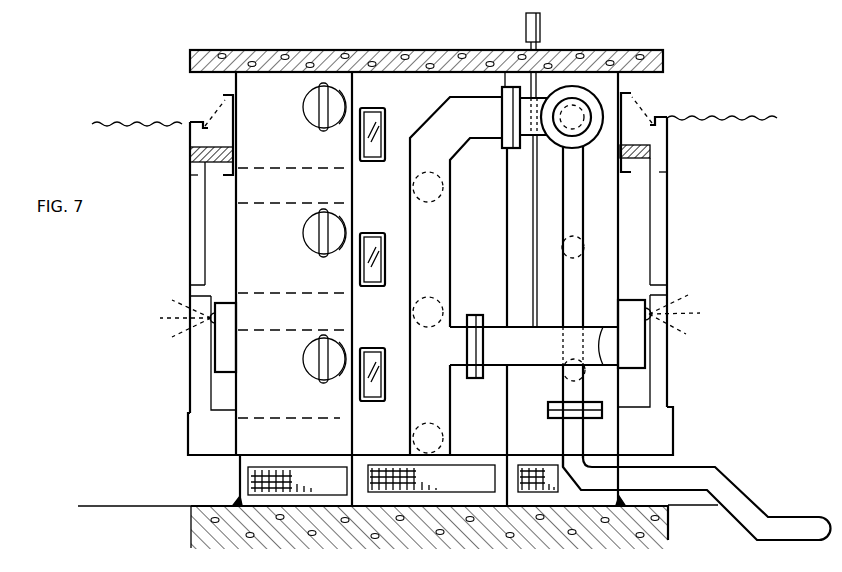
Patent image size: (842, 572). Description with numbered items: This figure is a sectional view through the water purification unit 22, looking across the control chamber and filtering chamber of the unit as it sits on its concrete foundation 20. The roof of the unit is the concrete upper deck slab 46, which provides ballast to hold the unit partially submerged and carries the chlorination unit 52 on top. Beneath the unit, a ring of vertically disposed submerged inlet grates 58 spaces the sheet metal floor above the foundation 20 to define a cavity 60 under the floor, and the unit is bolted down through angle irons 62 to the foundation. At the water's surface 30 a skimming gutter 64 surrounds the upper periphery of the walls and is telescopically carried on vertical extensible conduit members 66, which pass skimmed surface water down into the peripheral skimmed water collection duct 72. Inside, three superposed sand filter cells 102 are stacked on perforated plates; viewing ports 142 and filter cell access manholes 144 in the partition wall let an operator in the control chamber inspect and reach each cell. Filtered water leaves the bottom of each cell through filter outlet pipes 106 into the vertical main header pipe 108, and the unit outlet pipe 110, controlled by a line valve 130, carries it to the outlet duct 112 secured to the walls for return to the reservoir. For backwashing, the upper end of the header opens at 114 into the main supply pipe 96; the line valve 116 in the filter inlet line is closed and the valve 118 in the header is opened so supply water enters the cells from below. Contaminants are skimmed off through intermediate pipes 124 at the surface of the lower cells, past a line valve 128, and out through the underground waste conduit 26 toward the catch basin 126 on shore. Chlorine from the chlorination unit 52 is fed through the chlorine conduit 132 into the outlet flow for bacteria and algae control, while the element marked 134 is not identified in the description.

The foundation 20 is at (613, 543).
The water purification unit 22 is at (606, 36).
The underground waste conduit 26 is at (725, 482).
The water's surface 30 is at (155, 122).
The upper deck slab 46 is at (663, 60).
The chlorination unit 52 is at (542, 28).
The submerged inlet grates 58 is at (302, 498).
The cavity 60 is at (459, 488).
The angle irons 62 is at (237, 503).
The skimming gutter 64 is at (188, 134).
The extensible conduit members 66 is at (197, 234).
The skimmed water collection duct 72 is at (193, 437).
The main supply pipe 96 is at (575, 98).
The filter cells 102 is at (265, 195).
The filter outlet pipes 106 is at (443, 184).
The main header pipe 108 is at (442, 233).
The unit outlet pipe 110 is at (496, 367).
The outlet duct 112 is at (215, 370).
The header opening into supply pipe 114 is at (535, 276).
The line valve 116 is at (588, 138).
The valve 118 is at (511, 150).
The intermediate pipes 124 is at (574, 236).
The catch basin 126 is at (573, 189).
The line valve 128 is at (555, 418).
The line valve 130 is at (470, 318).
The chlorine conduit 132 is at (530, 193).
The light beam 134 is at (209, 321).
The viewing ports 142 is at (379, 155).
The filter cell access manholes 144 is at (305, 107).